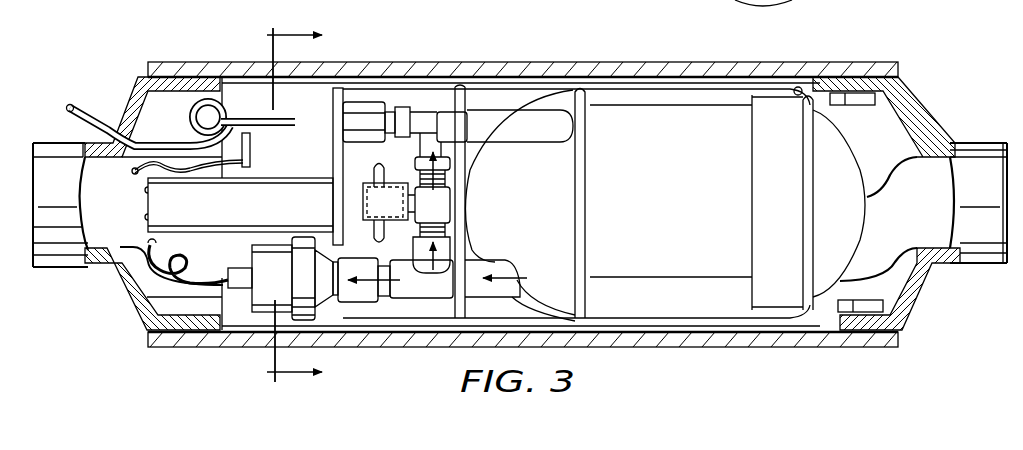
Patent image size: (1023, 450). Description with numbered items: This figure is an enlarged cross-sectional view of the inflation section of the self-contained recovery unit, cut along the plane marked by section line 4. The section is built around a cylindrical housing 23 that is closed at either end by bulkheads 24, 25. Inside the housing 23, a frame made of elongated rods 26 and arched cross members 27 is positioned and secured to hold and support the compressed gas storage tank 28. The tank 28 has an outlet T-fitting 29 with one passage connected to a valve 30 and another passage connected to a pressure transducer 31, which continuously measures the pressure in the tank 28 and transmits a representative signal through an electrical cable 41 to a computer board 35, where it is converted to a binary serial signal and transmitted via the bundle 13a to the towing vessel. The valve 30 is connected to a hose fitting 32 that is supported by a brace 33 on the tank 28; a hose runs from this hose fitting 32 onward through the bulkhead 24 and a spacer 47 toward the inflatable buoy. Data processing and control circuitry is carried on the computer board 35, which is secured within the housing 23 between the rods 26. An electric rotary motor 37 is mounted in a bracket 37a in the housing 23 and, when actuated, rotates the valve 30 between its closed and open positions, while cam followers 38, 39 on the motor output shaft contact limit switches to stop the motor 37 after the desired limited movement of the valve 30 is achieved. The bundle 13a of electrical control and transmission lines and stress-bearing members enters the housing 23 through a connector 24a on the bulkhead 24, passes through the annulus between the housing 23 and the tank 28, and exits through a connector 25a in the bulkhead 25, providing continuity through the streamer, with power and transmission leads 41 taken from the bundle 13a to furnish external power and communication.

The section line 4 is at (294, 205).
The bundle 13a is at (128, 218).
The cylindrical housing 23 is at (517, 68).
The bulkhead 24 is at (128, 93).
The connector 24a is at (63, 260).
The bulkhead 25 is at (912, 100).
The connector 25a is at (983, 143).
The elongated rods 26 is at (650, 80).
The arched cross members 27 is at (585, 137).
The compressed gas storage tank 28 is at (685, 199).
The outlet T-fitting 29 is at (430, 298).
The valve 30 is at (445, 210).
The pressure transducer 31 is at (285, 287).
The hose fitting 32 is at (375, 103).
The brace 33 is at (517, 137).
The computer board 35 is at (253, 100).
The electric rotary motor 37 is at (231, 213).
The bracket 37a is at (333, 157).
The cam follower 38 is at (377, 166).
The cam follower 39 is at (382, 243).
The electrical cable 41 is at (187, 173).
The spacer 47 is at (72, 106).